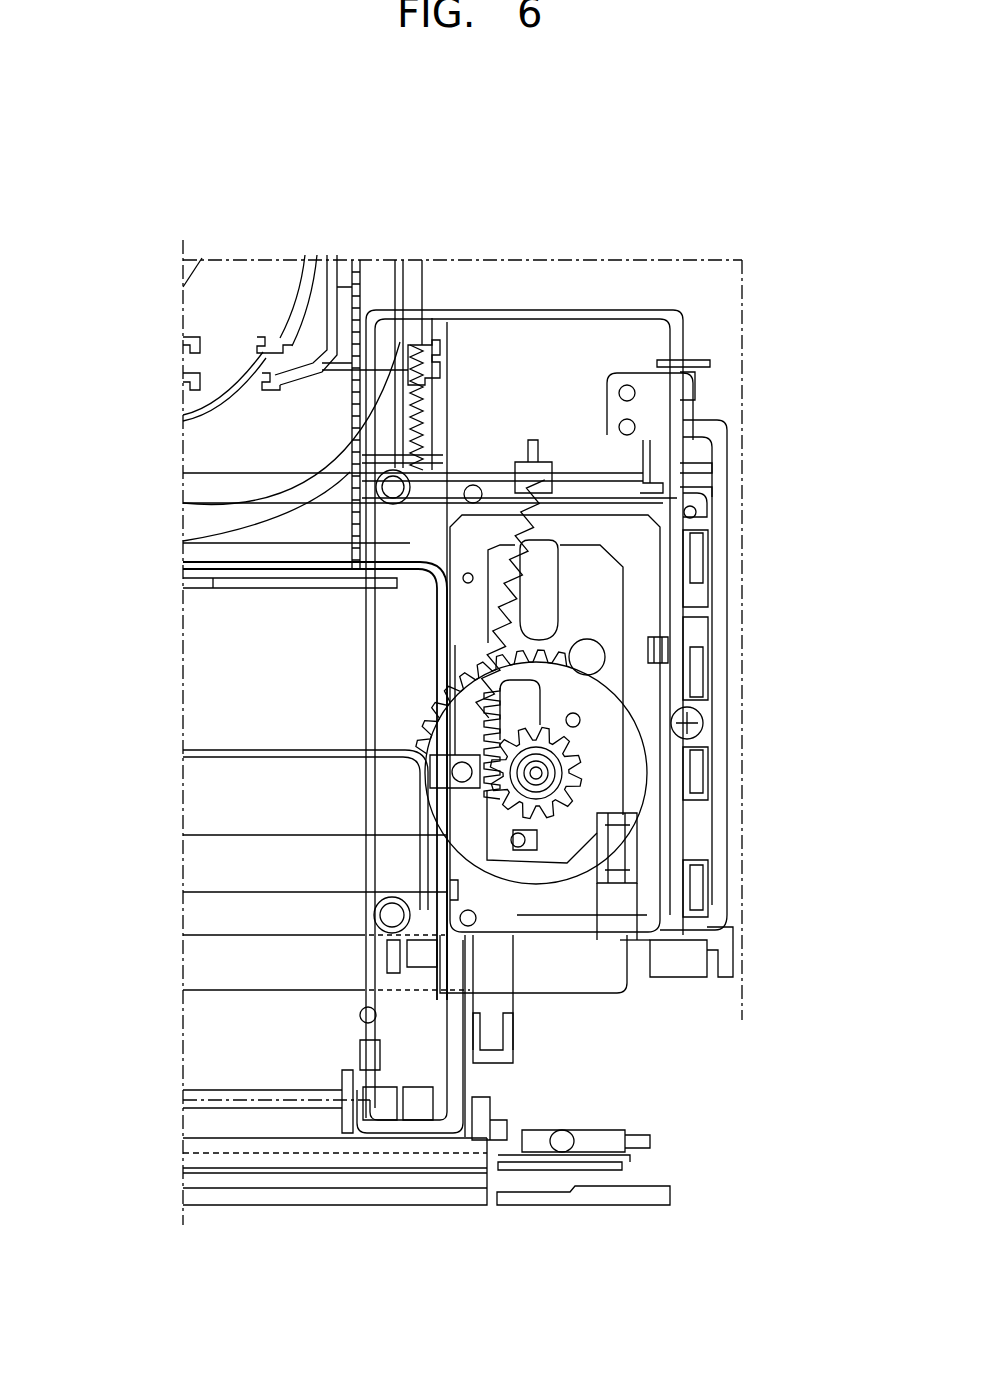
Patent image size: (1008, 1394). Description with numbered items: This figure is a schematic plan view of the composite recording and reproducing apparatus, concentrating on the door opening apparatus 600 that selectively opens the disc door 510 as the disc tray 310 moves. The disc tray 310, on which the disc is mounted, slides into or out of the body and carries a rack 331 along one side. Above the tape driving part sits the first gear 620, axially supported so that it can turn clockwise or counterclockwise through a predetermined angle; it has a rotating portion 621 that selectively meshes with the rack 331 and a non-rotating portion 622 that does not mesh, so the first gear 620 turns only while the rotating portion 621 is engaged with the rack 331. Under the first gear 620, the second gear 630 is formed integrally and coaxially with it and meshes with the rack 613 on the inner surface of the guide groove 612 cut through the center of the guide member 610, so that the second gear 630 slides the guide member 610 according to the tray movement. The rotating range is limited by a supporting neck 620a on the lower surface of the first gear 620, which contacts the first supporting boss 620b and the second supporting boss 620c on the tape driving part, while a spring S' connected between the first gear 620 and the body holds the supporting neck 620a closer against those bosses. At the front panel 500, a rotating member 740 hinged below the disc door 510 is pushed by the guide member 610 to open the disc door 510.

The rack 331 is at (423, 390).
The disc tray 310 is at (217, 440).
The spring S' is at (644, 574).
The guide groove 612 is at (660, 525).
The door opening apparatus 600 is at (633, 584).
The rack 613 is at (500, 622).
The rotating portion 621 is at (668, 645).
The first supporting boss 620b is at (580, 716).
The first gear 620 is at (652, 765).
The second gear 630 is at (593, 781).
The supporting neck 620a is at (540, 833).
The second supporting boss 620c is at (518, 848).
The non-rotating portion 622 is at (563, 873).
The guide member 610 is at (490, 1063).
The rotating member 740 is at (502, 1118).
The disc door 510 is at (327, 1205).
The front panel 500 is at (586, 1214).